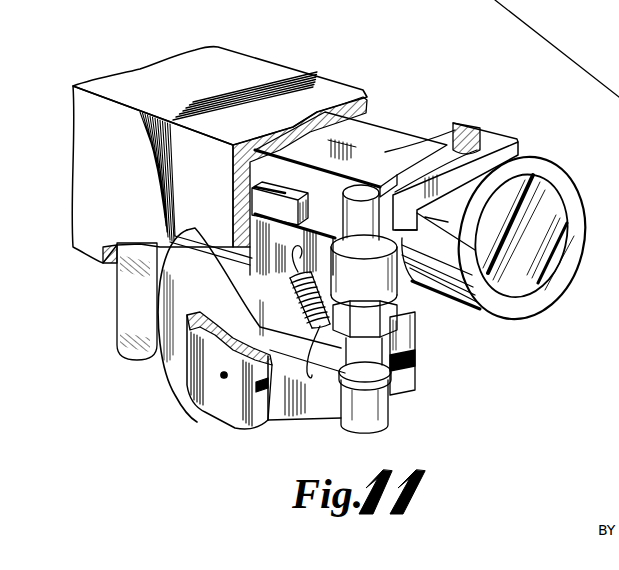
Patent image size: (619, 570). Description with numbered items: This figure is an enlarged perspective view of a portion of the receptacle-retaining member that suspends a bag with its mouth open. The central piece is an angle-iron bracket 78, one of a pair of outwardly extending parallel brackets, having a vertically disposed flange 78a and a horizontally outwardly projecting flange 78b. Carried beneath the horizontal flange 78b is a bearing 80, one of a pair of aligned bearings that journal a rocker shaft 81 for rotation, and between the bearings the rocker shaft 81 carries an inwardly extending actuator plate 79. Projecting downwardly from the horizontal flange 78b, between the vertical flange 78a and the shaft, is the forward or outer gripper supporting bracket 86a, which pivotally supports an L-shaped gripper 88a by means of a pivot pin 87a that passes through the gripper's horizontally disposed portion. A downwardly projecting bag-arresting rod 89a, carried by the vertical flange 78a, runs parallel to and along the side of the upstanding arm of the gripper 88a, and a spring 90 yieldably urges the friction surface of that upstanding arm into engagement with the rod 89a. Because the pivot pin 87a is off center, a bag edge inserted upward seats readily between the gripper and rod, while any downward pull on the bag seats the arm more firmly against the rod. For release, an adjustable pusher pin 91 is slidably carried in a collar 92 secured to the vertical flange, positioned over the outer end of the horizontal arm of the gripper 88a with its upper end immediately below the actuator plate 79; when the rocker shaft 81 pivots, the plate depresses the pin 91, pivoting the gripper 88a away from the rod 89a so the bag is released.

The bracket 78 is at (248, 50).
The vertical flange 78a is at (82, 183).
The horizontal flange 78b is at (285, 80).
The actuator plate 79 is at (343, 150).
The bearing 80 is at (403, 288).
The rocker shaft 81 is at (397, 133).
The gripper supporting bracket 86a is at (231, 390).
The pivot pin 87a is at (222, 378).
The L-shaped gripper 88a is at (167, 352).
The bag-arresting rod 89a is at (127, 297).
The spring 90 is at (301, 304).
The pusher pin 91 is at (377, 335).
The collar 92 is at (364, 246).